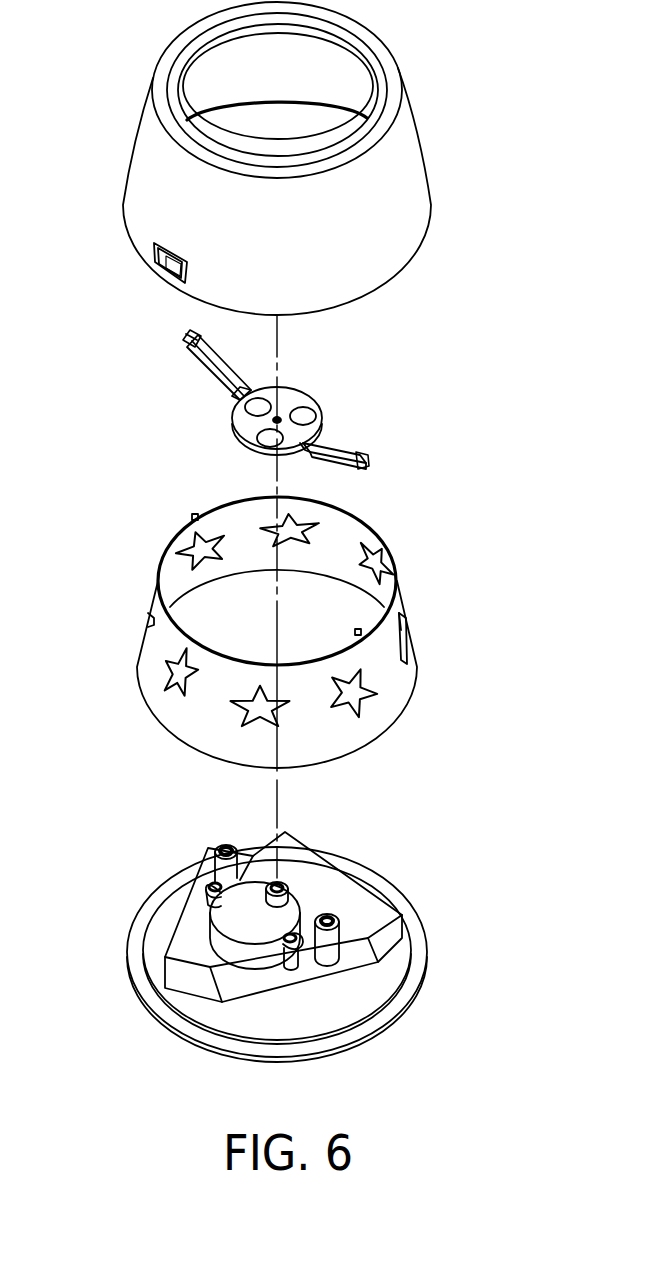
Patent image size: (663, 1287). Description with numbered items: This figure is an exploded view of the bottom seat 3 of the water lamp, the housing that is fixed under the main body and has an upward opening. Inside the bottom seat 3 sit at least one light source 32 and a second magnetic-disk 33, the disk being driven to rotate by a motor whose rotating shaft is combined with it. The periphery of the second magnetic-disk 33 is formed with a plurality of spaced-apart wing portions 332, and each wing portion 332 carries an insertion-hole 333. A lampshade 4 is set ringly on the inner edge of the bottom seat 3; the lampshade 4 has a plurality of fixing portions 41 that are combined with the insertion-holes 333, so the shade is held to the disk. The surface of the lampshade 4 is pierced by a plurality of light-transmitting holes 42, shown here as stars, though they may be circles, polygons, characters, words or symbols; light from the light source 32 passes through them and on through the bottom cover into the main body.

The bottom seat 3 is at (410, 180).
The second magnetic-disk 33 is at (323, 420).
The wing portion 332 is at (208, 374).
The insertion-hole 333 is at (187, 338).
The lampshade 4 is at (270, 630).
The fixing portion 41 is at (195, 517).
The light-transmitting hole 42 is at (163, 670).
The light source 32 is at (340, 922).